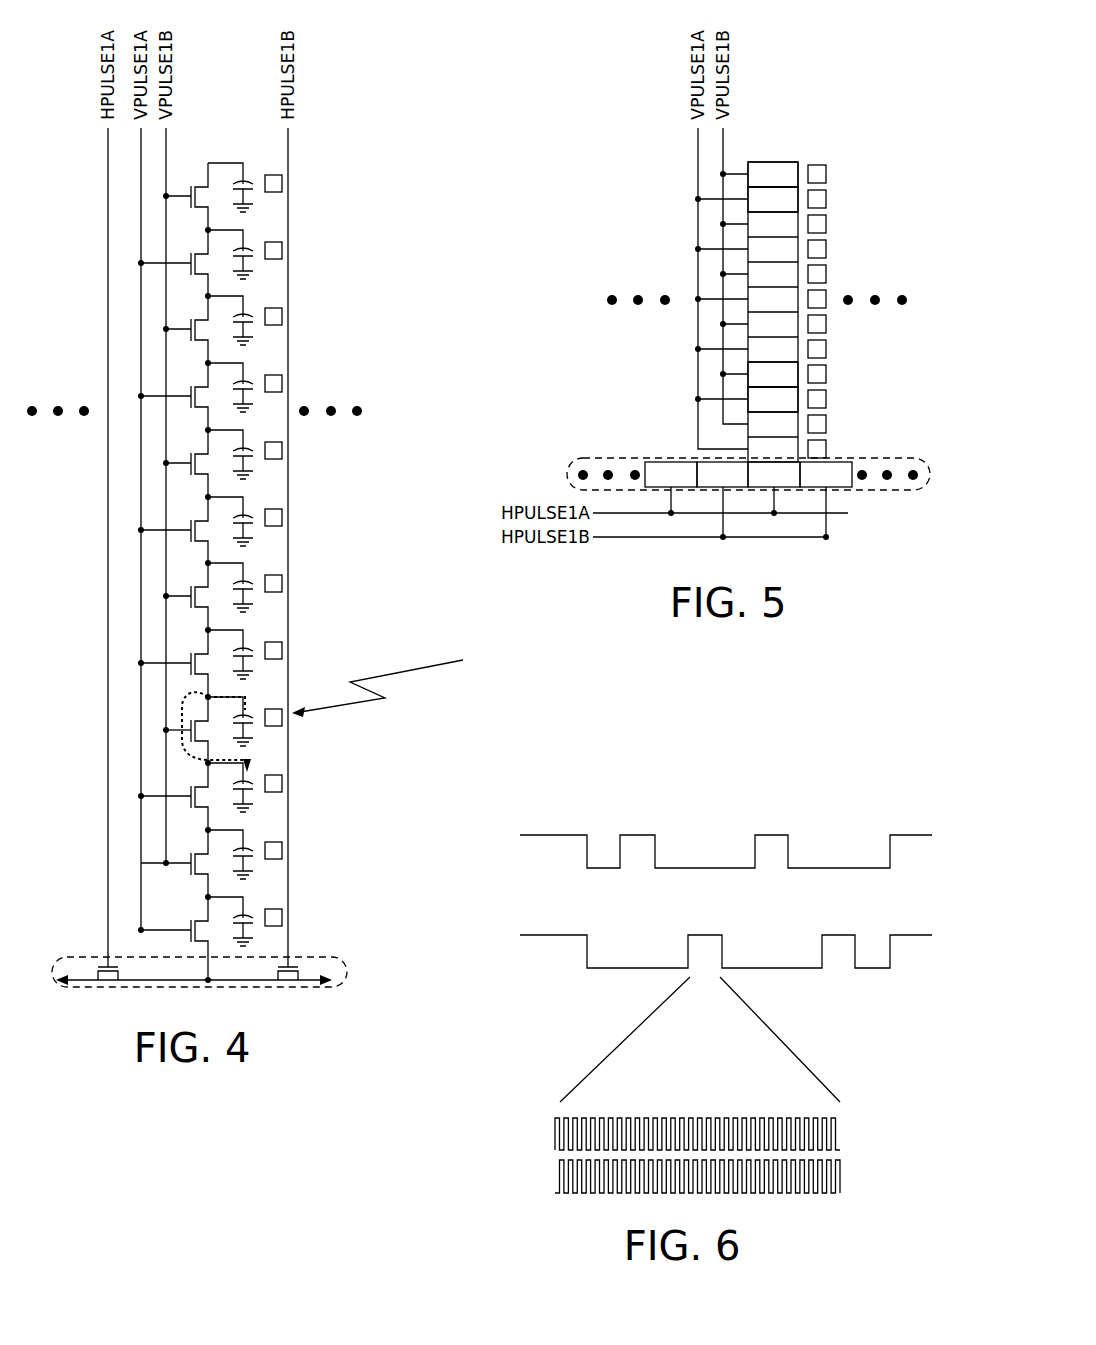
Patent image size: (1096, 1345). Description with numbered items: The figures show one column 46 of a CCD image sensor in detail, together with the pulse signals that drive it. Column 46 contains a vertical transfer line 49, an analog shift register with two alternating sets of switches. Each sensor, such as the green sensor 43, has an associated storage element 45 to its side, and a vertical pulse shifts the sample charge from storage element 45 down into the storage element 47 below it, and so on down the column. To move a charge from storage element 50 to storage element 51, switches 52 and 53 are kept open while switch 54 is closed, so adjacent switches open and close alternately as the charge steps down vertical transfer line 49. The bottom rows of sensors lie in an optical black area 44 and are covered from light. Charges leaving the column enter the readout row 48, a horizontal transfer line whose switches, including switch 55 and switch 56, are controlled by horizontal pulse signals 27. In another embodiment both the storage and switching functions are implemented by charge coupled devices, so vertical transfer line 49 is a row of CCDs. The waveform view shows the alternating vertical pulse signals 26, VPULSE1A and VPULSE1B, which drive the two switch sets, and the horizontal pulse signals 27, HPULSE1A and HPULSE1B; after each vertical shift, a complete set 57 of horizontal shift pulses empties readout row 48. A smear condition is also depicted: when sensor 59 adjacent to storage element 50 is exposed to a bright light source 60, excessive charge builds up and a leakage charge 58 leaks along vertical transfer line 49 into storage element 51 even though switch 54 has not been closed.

In FIG. 6, the vertical pulse signals 26 is at (708, 880).
In FIG. 6, the horizontal pulse signals 27 is at (631, 1152).
In FIG. 4, the sensor for green 43 is at (275, 173).
In FIG. 5, the sensor for green 43 is at (818, 163).
In FIG. 4, the optical black area 44 is at (311, 933).
In FIG. 5, the optical black area 44 is at (834, 388).
In FIG. 4, the storage element 45 is at (250, 180).
In FIG. 5, the storage element 45 is at (754, 161).
In FIG. 4, the column 46 is at (358, 312).
In FIG. 4, the storage element 47 is at (250, 250).
In FIG. 5, the storage element 47 is at (748, 192).
In FIG. 4, the readout row 48 is at (52, 985).
In FIG. 5, the readout row 48 is at (570, 470).
In FIG. 4, the vertical transfer line 49 is at (207, 152).
In FIG. 5, the vertical transfer line 49 is at (776, 150).
In FIG. 4, the storage element 50 is at (248, 716).
In FIG. 5, the storage element 50 is at (748, 374).
In FIG. 4, the storage element 51 is at (250, 782).
In FIG. 5, the storage element 51 is at (748, 400).
In FIG. 4, the switch 52 is at (192, 657).
In FIG. 4, the switch 53 is at (192, 790).
In FIG. 4, the switch 54 is at (211, 726).
In FIG. 4, the switch 55 is at (112, 987).
In FIG. 4, the switch 56 is at (289, 987).
In FIG. 6, the set of horizontal shift pulses 57 is at (846, 1117).
In FIG. 4, the leakage charge 58 is at (195, 706).
In FIG. 4, the sensor 59 is at (284, 708).
In FIG. 5, the sensor 59 is at (827, 375).
In FIG. 4, the bright light source 60 is at (397, 673).